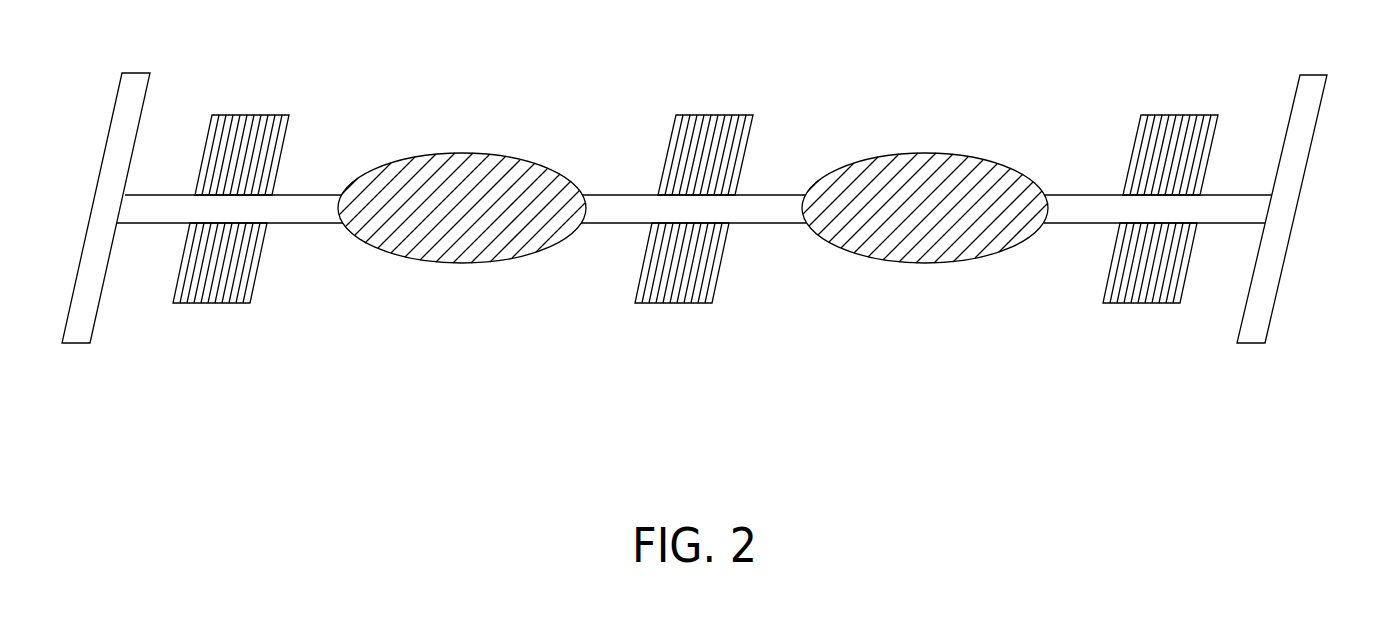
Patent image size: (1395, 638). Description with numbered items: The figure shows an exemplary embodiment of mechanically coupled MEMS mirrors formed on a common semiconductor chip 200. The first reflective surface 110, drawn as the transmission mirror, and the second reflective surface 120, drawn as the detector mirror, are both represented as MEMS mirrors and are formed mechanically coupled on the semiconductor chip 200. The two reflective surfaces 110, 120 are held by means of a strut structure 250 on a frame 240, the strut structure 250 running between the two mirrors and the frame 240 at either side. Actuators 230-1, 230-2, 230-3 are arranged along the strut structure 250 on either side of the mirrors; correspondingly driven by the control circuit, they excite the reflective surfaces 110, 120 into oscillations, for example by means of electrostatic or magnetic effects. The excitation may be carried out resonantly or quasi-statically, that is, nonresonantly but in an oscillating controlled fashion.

The semiconductor chip 200 is at (152, 458).
The first reflective surface 110 is at (458, 270).
The second reflective surface 120 is at (925, 268).
The actuator 230-1 is at (237, 355).
The actuator 230-2 is at (698, 355).
The actuator 230-3 is at (1167, 355).
The frame 240 is at (138, 73).
The strut structure 250 is at (603, 195).